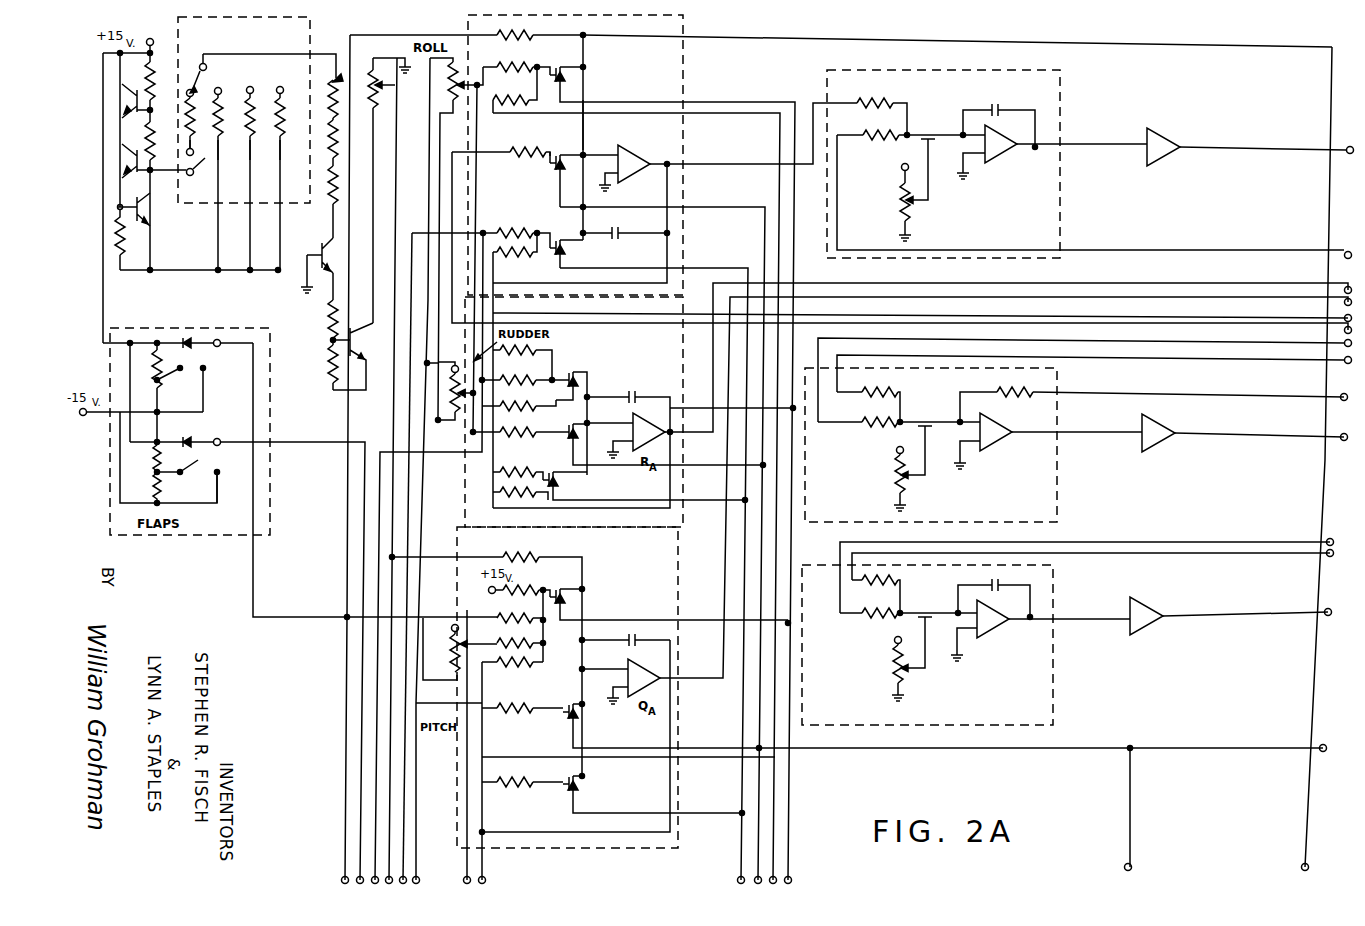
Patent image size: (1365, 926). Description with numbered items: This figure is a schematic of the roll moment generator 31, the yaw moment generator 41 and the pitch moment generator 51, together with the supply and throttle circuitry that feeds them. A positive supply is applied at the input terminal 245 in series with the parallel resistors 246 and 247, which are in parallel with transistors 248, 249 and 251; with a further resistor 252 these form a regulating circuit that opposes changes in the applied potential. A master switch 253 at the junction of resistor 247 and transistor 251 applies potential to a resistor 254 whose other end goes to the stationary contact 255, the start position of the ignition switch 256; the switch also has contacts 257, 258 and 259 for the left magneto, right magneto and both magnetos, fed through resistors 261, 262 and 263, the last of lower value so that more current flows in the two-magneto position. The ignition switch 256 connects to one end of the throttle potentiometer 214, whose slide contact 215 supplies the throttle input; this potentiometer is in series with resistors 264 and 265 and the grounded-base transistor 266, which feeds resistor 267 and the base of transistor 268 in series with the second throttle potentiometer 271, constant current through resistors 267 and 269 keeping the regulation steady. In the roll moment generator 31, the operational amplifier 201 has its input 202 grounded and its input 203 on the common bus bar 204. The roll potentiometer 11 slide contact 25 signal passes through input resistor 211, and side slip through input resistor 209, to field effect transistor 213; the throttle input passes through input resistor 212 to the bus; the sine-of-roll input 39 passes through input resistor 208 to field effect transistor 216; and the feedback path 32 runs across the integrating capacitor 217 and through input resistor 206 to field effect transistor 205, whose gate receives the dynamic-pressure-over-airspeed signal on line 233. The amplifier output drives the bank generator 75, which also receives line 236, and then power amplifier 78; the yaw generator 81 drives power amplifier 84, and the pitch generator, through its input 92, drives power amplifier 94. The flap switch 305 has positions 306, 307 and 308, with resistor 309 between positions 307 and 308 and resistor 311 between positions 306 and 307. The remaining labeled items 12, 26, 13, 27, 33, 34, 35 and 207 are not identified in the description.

The input terminal 245 is at (158, 29).
The resistor 246 is at (153, 87).
The resistor 247 is at (153, 145).
The transistor 248 is at (122, 109).
The transistor 249 is at (122, 171).
The transistor 251 is at (149, 216).
The resistor 252 is at (114, 234).
The master switch 253 is at (206, 176).
The resistor 254 is at (192, 135).
The stationary contact 255 is at (198, 119).
The ignition switch 256 is at (217, 66).
The contact 257 is at (228, 179).
The contact 258 is at (258, 179).
The contact 259 is at (289, 179).
The resistor 261 is at (219, 140).
The resistor 262 is at (250, 140).
The resistor 263 is at (281, 140).
The throttle potentiometer 214 is at (270, 59).
The slide contact 215 is at (344, 97).
The resistor 264 is at (345, 143).
The resistor 265 is at (345, 202).
The transistor 266 is at (330, 269).
The resistor 267 is at (320, 312).
The transistor 268 is at (353, 350).
The resistor 269 is at (327, 354).
The throttle potentiometer 271 is at (395, 190).
The roll potentiometer 11 is at (434, 469).
The slide contact 25 is at (459, 100).
The rudder control input 12 is at (441, 357).
The rudder potentiometer 26 is at (459, 390).
The pitch control input 13 is at (455, 624).
The pitch potentiometer 27 is at (454, 660).
The roll moment generator 31 is at (681, 83).
The input resistor 212 is at (529, 36).
The input resistor 211 is at (502, 60).
The junction 33 is at (540, 61).
The field effect transistor 213 is at (566, 65).
The conductor 34 is at (583, 74).
The conductor 35 is at (638, 102).
The input resistor 209 is at (635, 473).
The input resistor 208 is at (514, 149).
The input 39 is at (552, 146).
The field effect transistor 216 is at (551, 167).
The common bus bar 204 is at (583, 132).
The input 203 is at (604, 152).
The input 202 is at (602, 175).
The operational amplifier 201 is at (640, 150).
The feedback path 32 is at (659, 206).
The resistor 207 is at (514, 226).
The integrating capacitor 217 is at (619, 228).
The field effect transistor 205 is at (572, 250).
The input resistor 206 is at (518, 266).
The yaw moment generator 41 is at (617, 374).
The pitch moment generator 51 is at (632, 569).
The line 233 is at (738, 875).
The bank generator 75 is at (1053, 86).
The power amplifier 78 is at (1164, 143).
The line 236 is at (971, 252).
The yaw generator 81 is at (1048, 392).
The power amplifier 84 is at (1160, 437).
The input 92 is at (1043, 596).
The power amplifier 94 is at (1150, 610).
The flap switch 305 is at (213, 434).
The position 306 is at (176, 436).
The position 307 is at (193, 463).
The position 308 is at (198, 487).
The resistor 309 is at (153, 488).
The resistor 311 is at (148, 458).